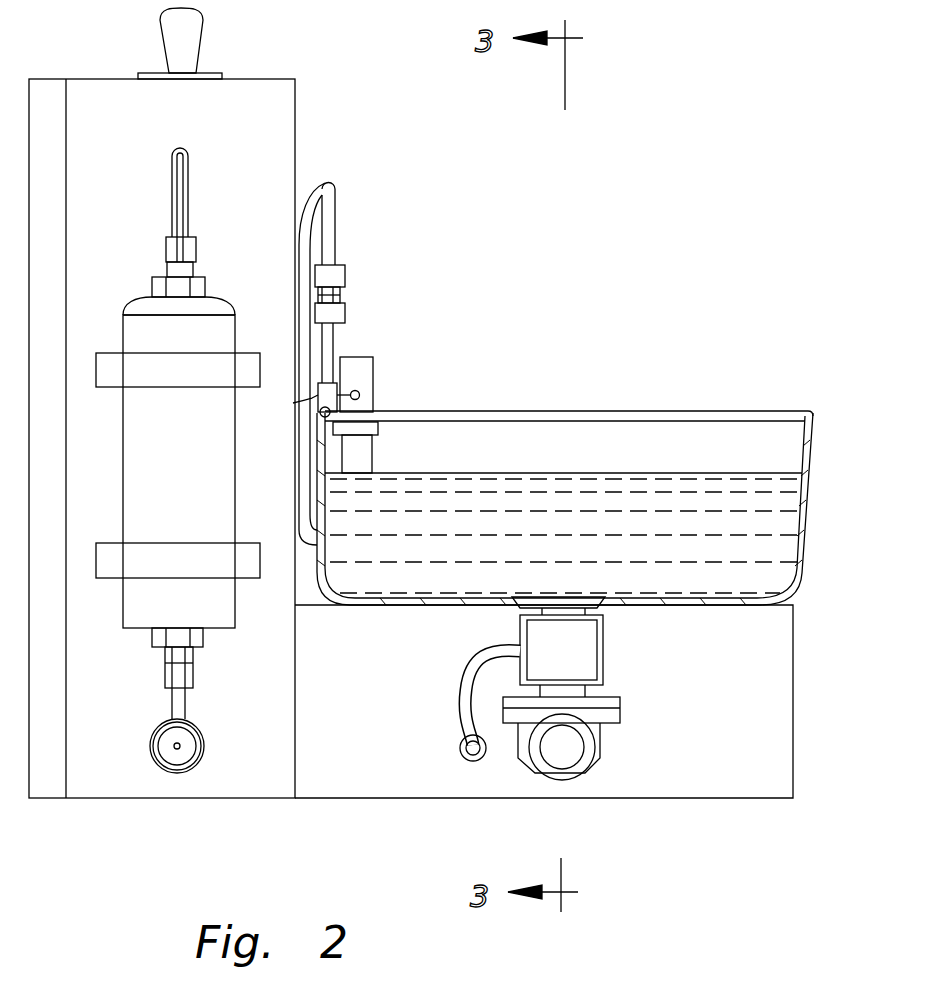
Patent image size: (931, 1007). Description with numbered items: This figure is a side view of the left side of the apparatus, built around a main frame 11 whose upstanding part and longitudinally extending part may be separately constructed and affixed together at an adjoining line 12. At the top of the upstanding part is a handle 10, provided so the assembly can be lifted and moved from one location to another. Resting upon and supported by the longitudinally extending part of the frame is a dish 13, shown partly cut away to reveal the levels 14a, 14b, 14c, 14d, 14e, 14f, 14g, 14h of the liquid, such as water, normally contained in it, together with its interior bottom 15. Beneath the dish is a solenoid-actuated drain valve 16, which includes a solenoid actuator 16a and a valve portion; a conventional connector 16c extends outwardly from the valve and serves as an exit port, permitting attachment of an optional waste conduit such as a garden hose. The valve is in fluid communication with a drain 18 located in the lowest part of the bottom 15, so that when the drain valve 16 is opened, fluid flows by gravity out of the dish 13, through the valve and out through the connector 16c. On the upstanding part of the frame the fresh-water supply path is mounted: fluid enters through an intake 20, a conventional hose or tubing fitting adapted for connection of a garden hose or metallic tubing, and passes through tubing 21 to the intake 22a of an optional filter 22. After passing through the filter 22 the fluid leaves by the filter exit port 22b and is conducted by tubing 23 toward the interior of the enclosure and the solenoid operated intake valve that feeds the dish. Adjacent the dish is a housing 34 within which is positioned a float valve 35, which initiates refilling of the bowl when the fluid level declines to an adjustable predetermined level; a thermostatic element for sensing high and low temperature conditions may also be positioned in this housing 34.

The handle 10 is at (183, 42).
The main frame 11 is at (300, 808).
The adjoining line 12 is at (293, 713).
The dish 13 is at (822, 497).
The liquid level 14a is at (567, 440).
The liquid level 14b is at (640, 472).
The liquid level 14c is at (710, 480).
The liquid level 14d is at (735, 495).
The liquid level 14e is at (505, 512).
The liquid level 14f is at (505, 523).
The liquid level 14g is at (767, 552).
The liquid level 14h is at (707, 595).
The interior bottom 15 is at (732, 613).
The solenoid-actuated drain valve 16 is at (581, 703).
The solenoid actuator 16a is at (575, 648).
The connector 16c is at (562, 760).
The drain 18 is at (555, 600).
The intake 20 is at (187, 745).
The tubing 21 is at (180, 702).
The filter 22 is at (194, 458).
The filter intake 22a is at (205, 632).
The filter exit port 22b is at (187, 287).
The tubing 23 is at (182, 209).
The housing 34 is at (360, 378).
The float valve 35 is at (362, 448).